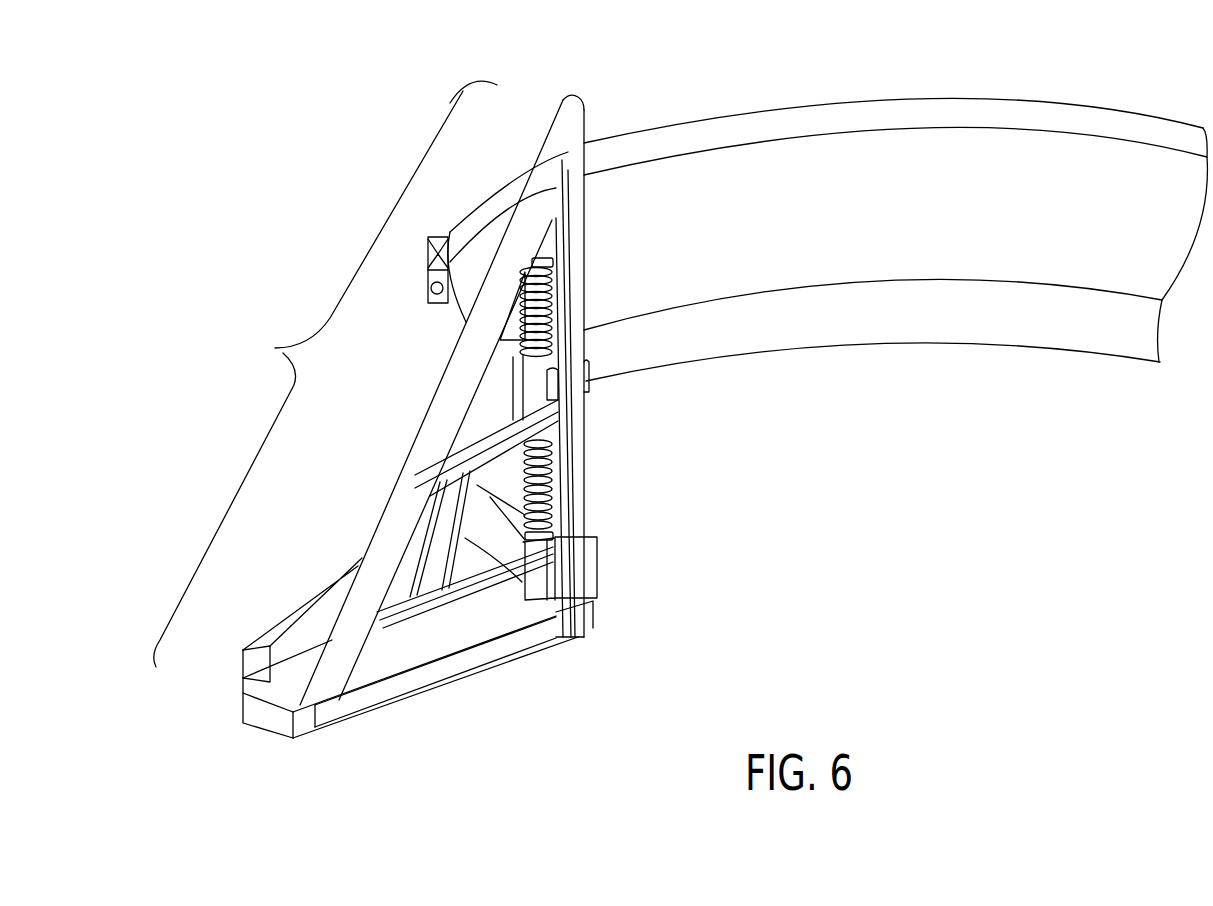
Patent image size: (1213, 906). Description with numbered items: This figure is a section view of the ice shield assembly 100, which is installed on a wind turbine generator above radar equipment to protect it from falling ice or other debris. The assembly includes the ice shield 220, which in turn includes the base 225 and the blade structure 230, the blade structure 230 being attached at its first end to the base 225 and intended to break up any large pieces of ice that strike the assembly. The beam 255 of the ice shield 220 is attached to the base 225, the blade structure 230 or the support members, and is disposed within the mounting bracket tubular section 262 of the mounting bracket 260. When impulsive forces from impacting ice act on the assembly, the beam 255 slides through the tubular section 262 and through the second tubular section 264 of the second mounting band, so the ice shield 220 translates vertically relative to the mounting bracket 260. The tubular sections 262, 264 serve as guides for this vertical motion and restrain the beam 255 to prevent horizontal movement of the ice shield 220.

The ice shield assembly 100 is at (880, 508).
The ice shield 220 is at (298, 158).
The base 225 is at (428, 622).
The blade structure 230 is at (225, 499).
The beam 255 is at (578, 438).
The mounting bracket 260 is at (537, 570).
The mounting bracket tubular section 262 is at (560, 567).
The second tubular section 264 is at (589, 378).